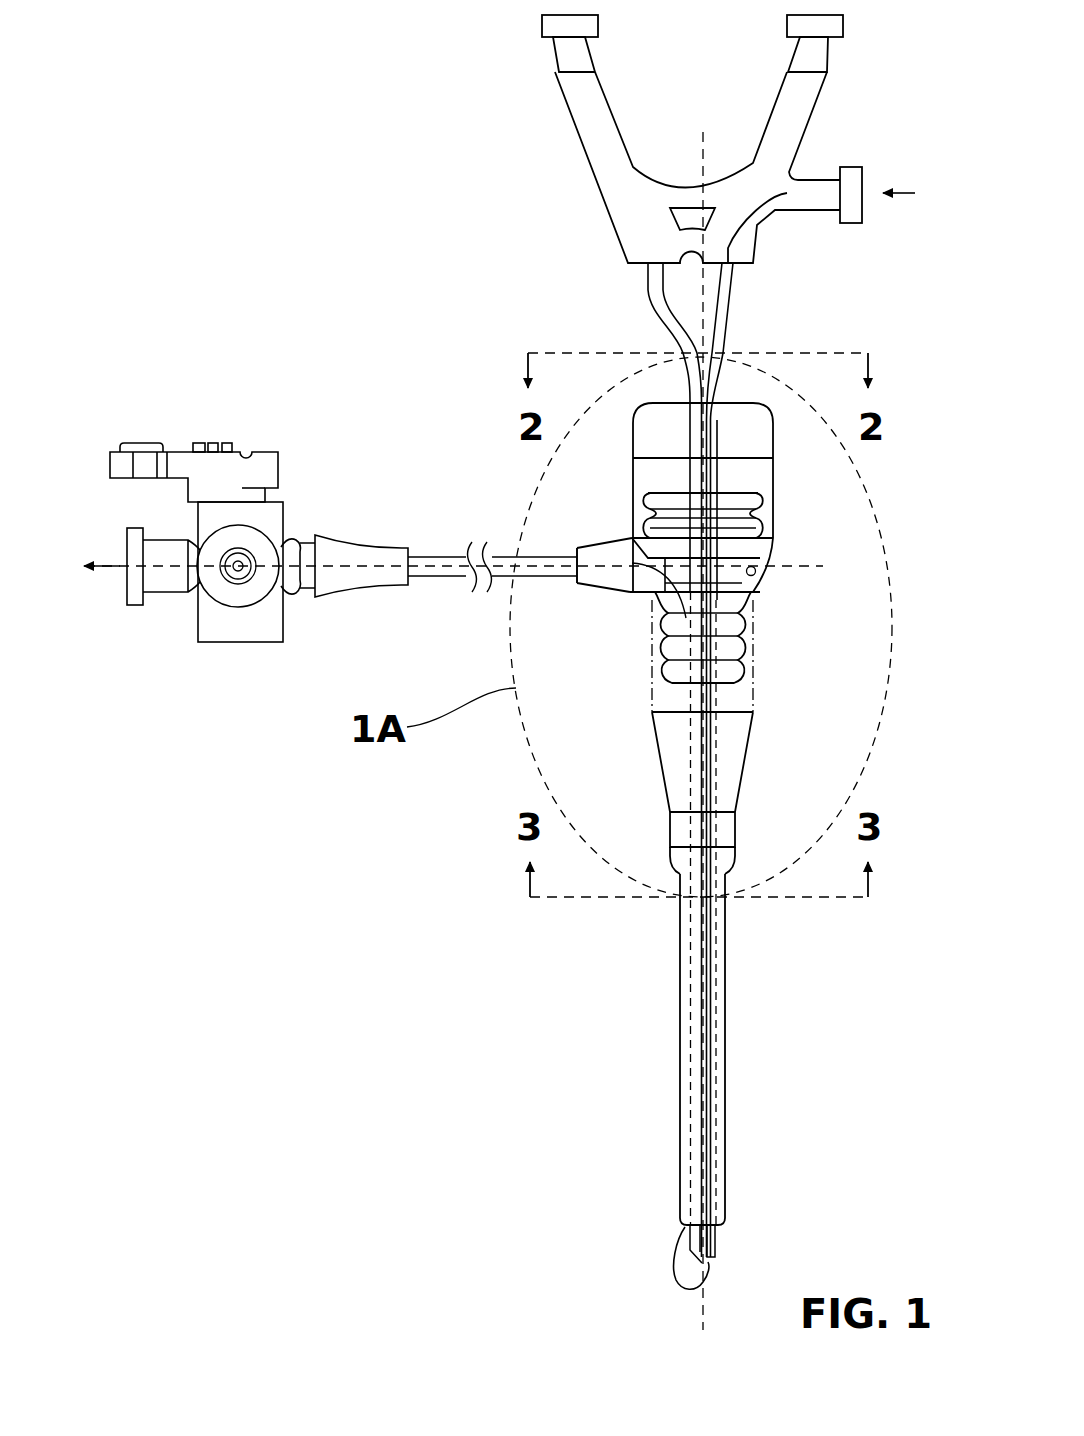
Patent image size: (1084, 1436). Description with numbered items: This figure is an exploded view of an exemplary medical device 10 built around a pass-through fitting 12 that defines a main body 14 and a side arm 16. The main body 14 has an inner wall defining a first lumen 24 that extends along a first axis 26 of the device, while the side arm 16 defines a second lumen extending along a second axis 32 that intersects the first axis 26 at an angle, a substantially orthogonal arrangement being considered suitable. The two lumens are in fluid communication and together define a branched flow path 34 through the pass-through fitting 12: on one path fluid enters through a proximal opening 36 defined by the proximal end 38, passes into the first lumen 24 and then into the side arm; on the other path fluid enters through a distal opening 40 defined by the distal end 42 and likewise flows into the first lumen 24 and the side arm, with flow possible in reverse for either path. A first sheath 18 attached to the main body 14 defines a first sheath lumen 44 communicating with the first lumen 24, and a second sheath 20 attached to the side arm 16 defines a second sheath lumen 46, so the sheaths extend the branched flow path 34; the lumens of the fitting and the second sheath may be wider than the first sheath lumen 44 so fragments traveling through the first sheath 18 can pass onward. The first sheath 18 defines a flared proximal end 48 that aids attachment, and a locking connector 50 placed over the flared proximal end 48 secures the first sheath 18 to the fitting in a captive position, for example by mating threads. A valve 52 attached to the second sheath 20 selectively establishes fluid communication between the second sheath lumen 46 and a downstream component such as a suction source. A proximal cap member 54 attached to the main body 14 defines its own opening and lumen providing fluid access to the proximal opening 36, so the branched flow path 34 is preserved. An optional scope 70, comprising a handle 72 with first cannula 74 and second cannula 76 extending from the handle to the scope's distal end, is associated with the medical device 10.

The medical device 10 is at (358, 338).
The pass-through fitting 12 is at (763, 515).
The main body 14 is at (768, 592).
The side arm 16 is at (609, 600).
The first sheath 18 is at (725, 1002).
The second sheath 20 is at (437, 578).
The first lumen 24 is at (763, 488).
The first axis 26 is at (703, 1305).
The second axis 32 is at (802, 567).
The branched flow path 34 is at (616, 526).
The proximal opening 36 is at (687, 493).
The proximal end 38 is at (758, 456).
The distal opening 40 is at (730, 685).
The distal end 42 is at (668, 690).
The first sheath lumen 44 is at (736, 1228).
The second sheath lumen 46 is at (533, 570).
The flared proximal end 48 is at (676, 872).
The locking connector 50 is at (752, 735).
The valve 52 is at (274, 428).
The proximal cap member 54 is at (658, 412).
The scope 70 is at (793, 250).
The handle 72 is at (820, 97).
The first cannula 74 is at (648, 293).
The second cannula 76 is at (733, 317).